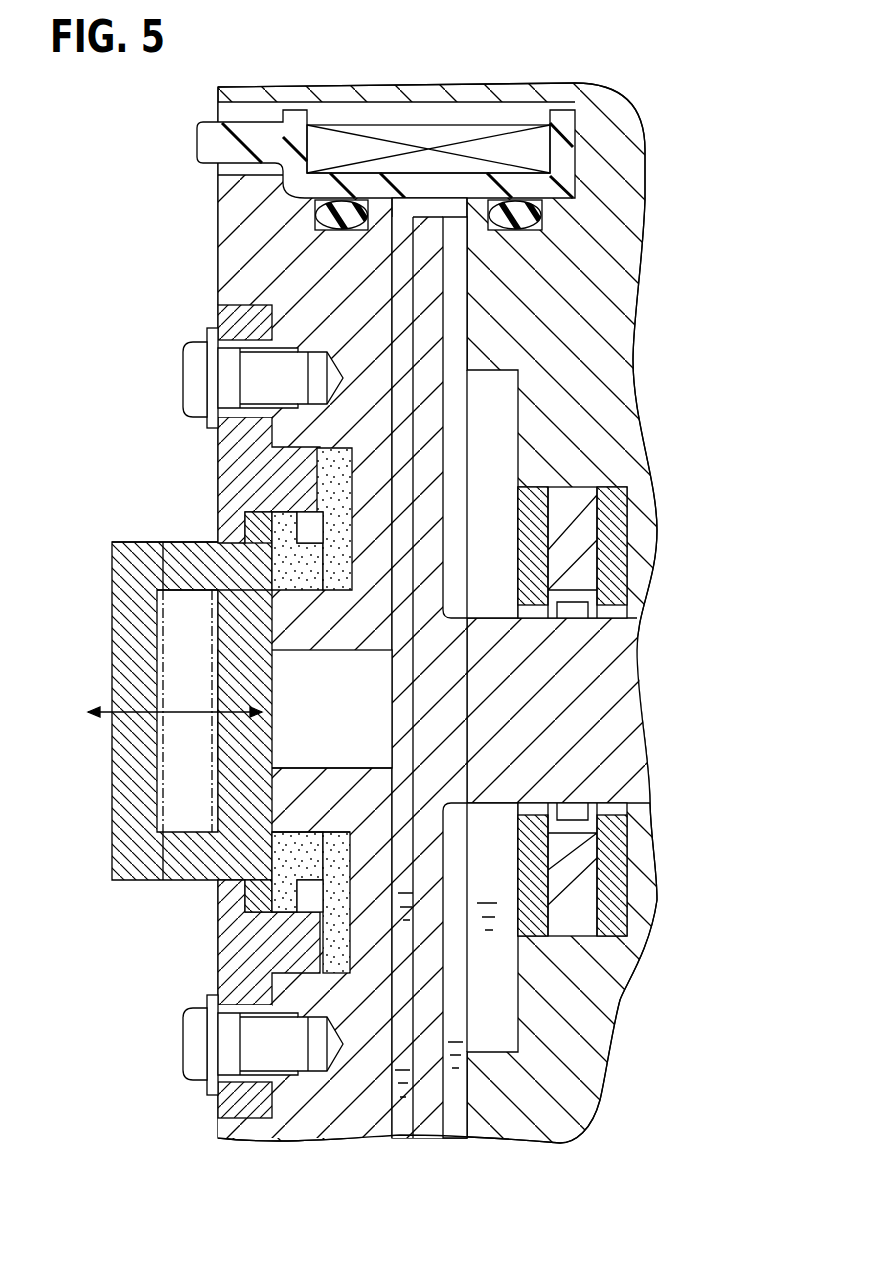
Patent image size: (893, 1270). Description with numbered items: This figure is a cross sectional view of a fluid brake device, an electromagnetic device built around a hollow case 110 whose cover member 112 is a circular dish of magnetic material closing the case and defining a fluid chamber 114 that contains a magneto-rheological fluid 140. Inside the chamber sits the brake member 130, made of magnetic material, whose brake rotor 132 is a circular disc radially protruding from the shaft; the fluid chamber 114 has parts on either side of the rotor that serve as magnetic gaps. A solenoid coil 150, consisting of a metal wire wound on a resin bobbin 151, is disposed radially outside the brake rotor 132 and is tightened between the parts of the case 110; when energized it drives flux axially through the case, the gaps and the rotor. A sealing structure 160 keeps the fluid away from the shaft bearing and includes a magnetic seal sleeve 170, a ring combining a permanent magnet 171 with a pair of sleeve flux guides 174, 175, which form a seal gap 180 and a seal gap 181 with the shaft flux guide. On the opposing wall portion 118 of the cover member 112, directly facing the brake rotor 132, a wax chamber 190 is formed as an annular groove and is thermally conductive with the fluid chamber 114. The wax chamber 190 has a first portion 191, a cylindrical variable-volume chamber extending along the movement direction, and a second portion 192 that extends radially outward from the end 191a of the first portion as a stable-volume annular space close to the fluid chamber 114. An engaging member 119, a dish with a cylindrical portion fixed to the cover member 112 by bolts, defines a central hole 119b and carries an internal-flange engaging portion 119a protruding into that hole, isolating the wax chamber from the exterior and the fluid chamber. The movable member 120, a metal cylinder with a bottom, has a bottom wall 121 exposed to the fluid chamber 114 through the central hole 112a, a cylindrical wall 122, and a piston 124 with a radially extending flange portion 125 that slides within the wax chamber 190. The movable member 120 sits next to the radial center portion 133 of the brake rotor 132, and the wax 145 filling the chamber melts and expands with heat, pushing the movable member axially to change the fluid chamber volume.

The case 110 is at (375, 613).
The cover member 112 is at (248, 246).
The central hole 112a is at (295, 768).
The fluid chamber 114 is at (430, 207).
The opposing wall portion 118 is at (372, 337).
The engaging member 119 is at (253, 467).
The engaging portion 119a is at (260, 525).
The central hole 119b is at (267, 906).
The movable member 120 is at (161, 711).
The bottom wall 121 is at (132, 662).
The cylindrical wall 122 is at (202, 562).
The piston 124 is at (252, 577).
The flange portion 125 is at (230, 526).
The brake member 130 is at (256, 668).
The brake rotor 132 is at (428, 417).
The radial center portion 133 is at (330, 678).
The magneto-rheological fluid 140 is at (400, 1108).
The wax 145 is at (340, 477).
The solenoid coil 150 is at (413, 150).
The resin bobbin 151 is at (322, 188).
The sealing structure 160 is at (490, 830).
The magnetic seal sleeve 170 is at (653, 552).
The permanent magnet 171 is at (582, 535).
The sleeve flux guide 174 is at (610, 567).
The sleeve flux guide 175 is at (537, 535).
The seal gap 180 is at (625, 817).
The seal gap 181 is at (566, 818).
The wax chamber 190 is at (390, 902).
The first portion 191 is at (288, 848).
The end 191a is at (340, 848).
The second portion 192 is at (333, 940).